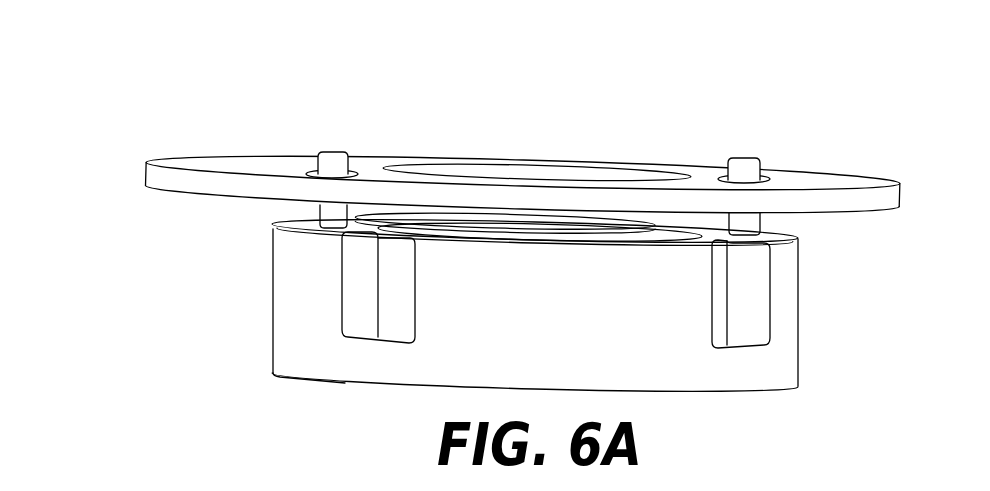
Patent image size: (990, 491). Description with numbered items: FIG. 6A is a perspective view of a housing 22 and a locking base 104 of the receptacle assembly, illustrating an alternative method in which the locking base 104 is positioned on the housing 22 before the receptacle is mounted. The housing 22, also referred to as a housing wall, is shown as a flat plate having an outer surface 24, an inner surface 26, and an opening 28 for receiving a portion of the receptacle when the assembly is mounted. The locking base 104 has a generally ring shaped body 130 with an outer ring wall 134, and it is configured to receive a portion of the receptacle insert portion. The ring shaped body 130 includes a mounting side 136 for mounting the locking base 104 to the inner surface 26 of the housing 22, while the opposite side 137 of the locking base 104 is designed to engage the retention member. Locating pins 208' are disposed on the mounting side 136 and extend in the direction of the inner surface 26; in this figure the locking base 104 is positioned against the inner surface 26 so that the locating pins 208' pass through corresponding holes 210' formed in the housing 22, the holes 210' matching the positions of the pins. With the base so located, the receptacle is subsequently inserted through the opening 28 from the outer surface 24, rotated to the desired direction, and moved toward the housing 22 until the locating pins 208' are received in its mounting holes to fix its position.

The housing 22 is at (552, 193).
The outer surface 24 is at (887, 178).
The inner surface 26 is at (235, 206).
The opening 28 is at (455, 170).
The locating pins 208' is at (516, 139).
The holes 210' is at (554, 137).
The locking base 104 is at (540, 332).
The ring shaped body 130 is at (747, 377).
The outer ring wall 134 is at (282, 335).
The mounting side 136 is at (790, 222).
The opposite side 137 is at (343, 382).